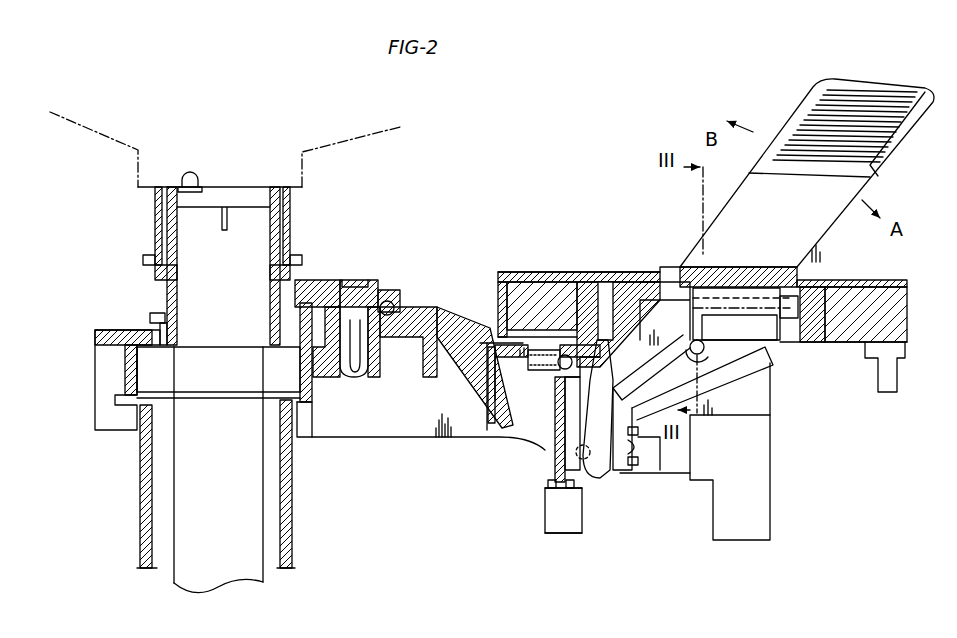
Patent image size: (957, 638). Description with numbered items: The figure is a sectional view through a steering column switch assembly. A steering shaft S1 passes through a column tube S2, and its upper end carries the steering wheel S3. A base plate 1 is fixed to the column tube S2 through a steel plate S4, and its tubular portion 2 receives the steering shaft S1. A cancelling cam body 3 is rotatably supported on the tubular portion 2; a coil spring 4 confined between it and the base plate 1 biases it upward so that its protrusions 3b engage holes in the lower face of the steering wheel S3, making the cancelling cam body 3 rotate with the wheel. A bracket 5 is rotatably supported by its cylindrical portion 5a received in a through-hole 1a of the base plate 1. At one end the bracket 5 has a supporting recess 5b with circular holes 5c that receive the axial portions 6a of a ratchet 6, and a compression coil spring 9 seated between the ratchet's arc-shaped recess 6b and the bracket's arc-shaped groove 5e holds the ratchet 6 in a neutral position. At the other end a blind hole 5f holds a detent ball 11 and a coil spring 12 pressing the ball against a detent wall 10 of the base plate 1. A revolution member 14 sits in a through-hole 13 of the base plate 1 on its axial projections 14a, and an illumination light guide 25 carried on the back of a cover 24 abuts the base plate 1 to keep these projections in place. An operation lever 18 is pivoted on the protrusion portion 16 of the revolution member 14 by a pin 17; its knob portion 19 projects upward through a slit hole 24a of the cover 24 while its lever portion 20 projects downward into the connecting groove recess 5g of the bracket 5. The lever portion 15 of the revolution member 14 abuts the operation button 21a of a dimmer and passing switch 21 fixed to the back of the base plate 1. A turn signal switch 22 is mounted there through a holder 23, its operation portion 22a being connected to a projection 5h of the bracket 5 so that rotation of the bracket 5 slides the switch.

The base plate 1 is at (102, 330).
The through-hole 1a is at (350, 378).
The tubular portion 2 is at (178, 320).
The cancelling cam body 3 is at (290, 225).
The protrusions 3b is at (196, 172).
The coil spring 4 is at (150, 318).
The bracket 5 is at (428, 305).
The cylindrical portion 5a is at (360, 374).
The supporting recess 5b is at (350, 287).
The circular holes 5c is at (312, 292).
The arc-shaped groove 5e is at (385, 335).
The blind hole 5f is at (540, 348).
The connecting groove recess 5g is at (600, 472).
The projection 5h is at (558, 486).
The ratchet 6 is at (372, 290).
The axial portions 6a is at (318, 300).
The arc-shaped recess 6b is at (400, 300).
The compression coil spring 9 is at (389, 298).
The detent wall 10 is at (565, 408).
The detent ball 11 is at (561, 370).
The coil spring 12 is at (506, 360).
The through-hole 13 is at (606, 335).
The revolution member 14 is at (752, 384).
The axial projections 14a is at (706, 353).
The lever portion 15 is at (628, 465).
The protrusion portion 16 is at (815, 352).
The pin 17 is at (747, 300).
The operation lever 18 is at (695, 214).
The knob portion 19 is at (789, 118).
The lever portion 20 is at (597, 478).
The dimmer and passing switch 21 is at (742, 522).
The operation button 21a is at (640, 460).
The turn signal switch 22 is at (545, 530).
The operation portion 22a is at (548, 486).
The holder 23 is at (553, 470).
The cover 24 is at (548, 272).
The slit hole 24a is at (666, 272).
The illumination light guide 25 is at (518, 282).
The steering shaft S1 is at (263, 545).
The column tube S2 is at (293, 479).
The steering wheel S3 is at (372, 131).
The steel plate S4 is at (298, 418).